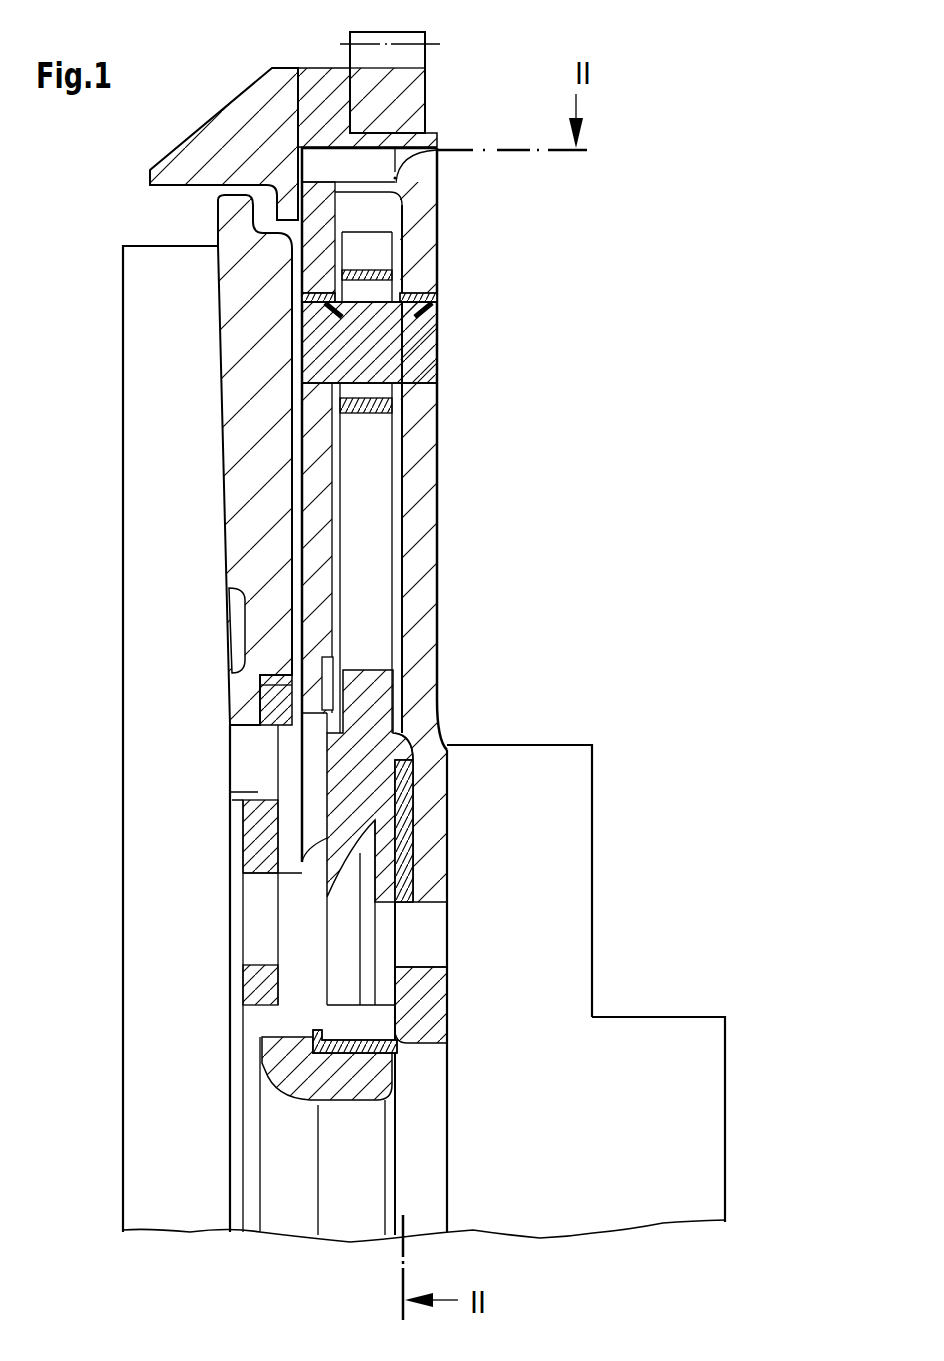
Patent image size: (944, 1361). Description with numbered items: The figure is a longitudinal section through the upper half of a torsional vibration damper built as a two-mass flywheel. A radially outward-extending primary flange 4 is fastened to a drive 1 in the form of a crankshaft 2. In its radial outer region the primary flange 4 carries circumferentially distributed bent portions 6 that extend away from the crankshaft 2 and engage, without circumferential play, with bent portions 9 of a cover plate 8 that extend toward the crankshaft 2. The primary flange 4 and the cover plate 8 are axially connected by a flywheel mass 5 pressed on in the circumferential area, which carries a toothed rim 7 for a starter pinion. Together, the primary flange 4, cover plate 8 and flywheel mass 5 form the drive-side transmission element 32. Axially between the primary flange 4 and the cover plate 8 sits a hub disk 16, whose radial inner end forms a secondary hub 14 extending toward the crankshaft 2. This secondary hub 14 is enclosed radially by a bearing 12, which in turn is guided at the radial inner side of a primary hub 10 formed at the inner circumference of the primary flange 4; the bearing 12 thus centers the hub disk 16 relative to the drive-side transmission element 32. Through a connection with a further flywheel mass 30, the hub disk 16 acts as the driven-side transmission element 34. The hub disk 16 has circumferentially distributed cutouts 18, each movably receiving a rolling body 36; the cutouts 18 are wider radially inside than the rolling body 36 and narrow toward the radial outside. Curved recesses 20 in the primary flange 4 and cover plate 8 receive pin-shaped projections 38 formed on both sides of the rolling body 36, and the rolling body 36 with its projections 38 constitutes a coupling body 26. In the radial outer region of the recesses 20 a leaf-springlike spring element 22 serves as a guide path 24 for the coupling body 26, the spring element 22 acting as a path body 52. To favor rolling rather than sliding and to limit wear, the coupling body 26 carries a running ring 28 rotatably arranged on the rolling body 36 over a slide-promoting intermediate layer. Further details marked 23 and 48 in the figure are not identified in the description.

The drive 1 is at (630, 1010).
The crankshaft 2 is at (553, 752).
The primary flange 4 is at (427, 563).
The flywheel mass 5 is at (257, 103).
The bent portions 6 is at (367, 160).
The toothed rim 7 is at (412, 97).
The cover plate 8 is at (327, 603).
The bent portions 9 is at (316, 185).
The primary hub 10 is at (435, 1025).
The bearing 12 is at (400, 1052).
The secondary hub 14 is at (390, 1063).
The hub disk 16 is at (372, 793).
The cutouts 18 is at (380, 523).
The recesses 20 is at (327, 424).
The spring element 22 is at (380, 295).
The gap 23 is at (367, 460).
The guide path 24 is at (342, 316).
The coupling body 26 is at (413, 366).
The running ring 28 is at (373, 280).
The flywheel mass 30 is at (255, 512).
The drive-side transmission element 32 is at (440, 668).
The driven-side transmission element 34 is at (218, 602).
The rolling body 36 is at (437, 363).
The projections 38 is at (433, 332).
The seal ring 48 is at (403, 843).
The path body 52 is at (415, 300).